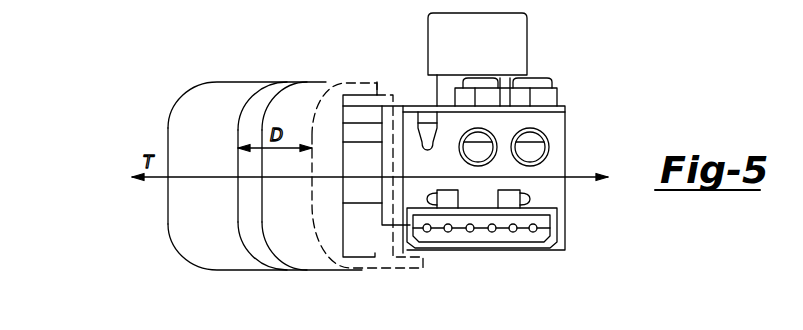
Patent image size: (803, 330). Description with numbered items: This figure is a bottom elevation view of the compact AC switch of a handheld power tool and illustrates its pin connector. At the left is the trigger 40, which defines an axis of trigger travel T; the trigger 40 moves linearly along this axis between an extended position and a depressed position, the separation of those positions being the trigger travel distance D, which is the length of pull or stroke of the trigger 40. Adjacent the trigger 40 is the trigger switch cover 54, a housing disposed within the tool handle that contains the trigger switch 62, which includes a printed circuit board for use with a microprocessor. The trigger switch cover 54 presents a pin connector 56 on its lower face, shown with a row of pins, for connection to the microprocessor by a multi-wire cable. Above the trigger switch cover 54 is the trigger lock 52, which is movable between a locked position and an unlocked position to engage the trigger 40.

The trigger 40 is at (197, 213).
The trigger lock 52 is at (510, 40).
The trigger switch cover 54 is at (550, 140).
The pin connector 56 is at (483, 240).
The trigger switch 62 is at (575, 103).